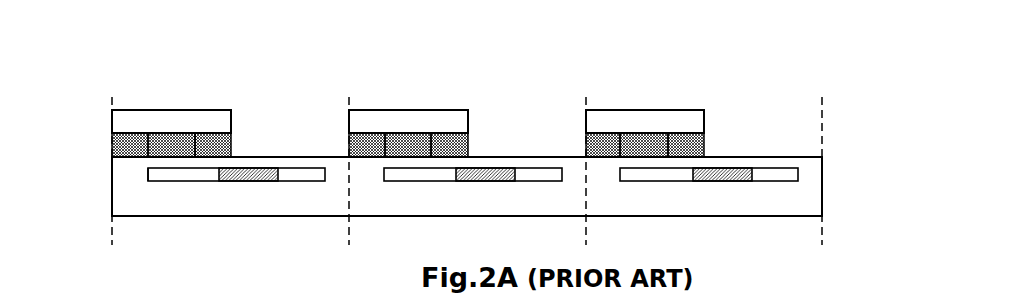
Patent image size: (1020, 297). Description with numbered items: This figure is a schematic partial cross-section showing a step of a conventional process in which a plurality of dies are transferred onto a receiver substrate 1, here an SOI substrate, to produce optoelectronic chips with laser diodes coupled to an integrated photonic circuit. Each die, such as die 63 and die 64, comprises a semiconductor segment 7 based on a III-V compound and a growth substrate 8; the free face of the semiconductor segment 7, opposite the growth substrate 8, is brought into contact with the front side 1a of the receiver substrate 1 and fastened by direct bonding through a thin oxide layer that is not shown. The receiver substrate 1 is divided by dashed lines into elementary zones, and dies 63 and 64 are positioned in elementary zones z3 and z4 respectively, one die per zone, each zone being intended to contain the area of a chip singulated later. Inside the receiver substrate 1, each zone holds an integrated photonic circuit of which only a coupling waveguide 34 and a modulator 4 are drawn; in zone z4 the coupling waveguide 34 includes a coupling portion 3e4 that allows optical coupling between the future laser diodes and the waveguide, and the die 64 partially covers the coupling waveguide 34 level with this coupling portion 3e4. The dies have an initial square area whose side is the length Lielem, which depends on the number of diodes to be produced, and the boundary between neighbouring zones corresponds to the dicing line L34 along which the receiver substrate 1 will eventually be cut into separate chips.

The receiver substrate 1 is at (826, 185).
The front side of the receiver substrate 1a is at (780, 157).
The growth substrate 8 is at (111, 122).
The semiconductor segment 7 is at (111, 146).
The coupling waveguide 34 is at (190, 184).
The coupling portion 3e4 is at (155, 182).
The modulator 4 is at (250, 184).
The elementary zone z4 is at (249, 71).
The elementary zone z3 is at (486, 71).
The die 64 is at (268, 110).
The die 63 is at (500, 110).
The initial die side length Lielem is at (226, 89).
The dicing line L34 is at (348, 271).